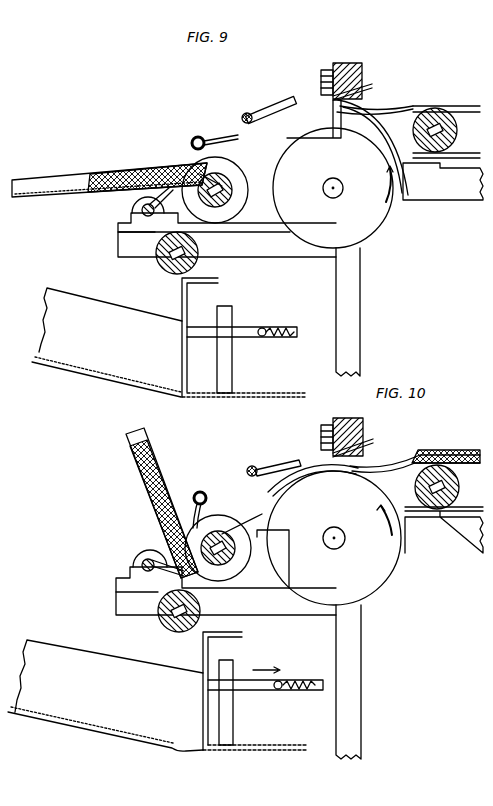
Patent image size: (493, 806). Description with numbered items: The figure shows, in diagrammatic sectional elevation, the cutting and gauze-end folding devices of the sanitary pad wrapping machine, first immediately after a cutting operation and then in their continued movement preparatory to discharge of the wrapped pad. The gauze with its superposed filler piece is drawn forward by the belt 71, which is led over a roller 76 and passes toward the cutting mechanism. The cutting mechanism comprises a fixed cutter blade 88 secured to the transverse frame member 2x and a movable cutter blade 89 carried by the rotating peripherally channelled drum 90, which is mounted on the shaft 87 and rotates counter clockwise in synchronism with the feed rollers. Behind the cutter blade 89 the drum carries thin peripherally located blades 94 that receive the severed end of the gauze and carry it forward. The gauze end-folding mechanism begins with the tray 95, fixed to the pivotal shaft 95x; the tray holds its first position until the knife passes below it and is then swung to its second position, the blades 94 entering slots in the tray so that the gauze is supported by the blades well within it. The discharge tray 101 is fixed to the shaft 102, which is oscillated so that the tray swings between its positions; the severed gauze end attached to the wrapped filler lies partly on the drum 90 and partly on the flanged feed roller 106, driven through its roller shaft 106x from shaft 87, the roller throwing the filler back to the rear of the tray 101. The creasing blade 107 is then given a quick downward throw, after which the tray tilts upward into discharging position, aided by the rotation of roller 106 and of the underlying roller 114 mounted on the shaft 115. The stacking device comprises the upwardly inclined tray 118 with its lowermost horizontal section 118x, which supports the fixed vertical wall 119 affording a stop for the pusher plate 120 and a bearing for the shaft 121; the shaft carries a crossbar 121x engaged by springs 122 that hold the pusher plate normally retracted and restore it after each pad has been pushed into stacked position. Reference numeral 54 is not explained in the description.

In FIG. 9, the transverse frame member 2x is at (358, 73).
In FIG. 10, the transverse frame member 2x is at (364, 422).
In FIG. 9, the web 54 is at (428, 110).
In FIG. 9, the belt 71 is at (470, 107).
In FIG. 10, the belt 71 is at (415, 461).
In FIG. 9, the roller 76 is at (446, 160).
In FIG. 10, the roller 76 is at (438, 508).
In FIG. 9, the shaft 87 is at (340, 181).
In FIG. 10, the shaft 87 is at (341, 532).
In FIG. 9, the fixed cutter blade 88 is at (331, 100).
In FIG. 10, the fixed cutter blade 88 is at (331, 456).
In FIG. 9, the movable cutter blade 89 is at (333, 122).
In FIG. 10, the movable cutter blade 89 is at (275, 536).
In FIG. 9, the drum 90 is at (333, 188).
In FIG. 10, the drum 90 is at (334, 538).
In FIG. 9, the blades 94 is at (381, 137).
In FIG. 10, the blades 94 is at (338, 466).
In FIG. 9, the tray 95 is at (272, 108).
In FIG. 10, the tray 95 is at (269, 467).
In FIG. 9, the pivotal shaft 95x is at (248, 113).
In FIG. 10, the pivotal shaft 95x is at (250, 467).
In FIG. 9, the discharge tray 101 is at (64, 177).
In FIG. 10, the discharge tray 101 is at (143, 438).
In FIG. 9, the shaft 102 is at (139, 210).
In FIG. 10, the shaft 102 is at (140, 566).
In FIG. 9, the flanged feed roller 106 is at (228, 204).
In FIG. 10, the flanged feed roller 106 is at (238, 567).
In FIG. 9, the roller shaft 106x is at (203, 176).
In FIG. 10, the roller shaft 106x is at (227, 528).
In FIG. 9, the creasing blade 107 is at (210, 131).
In FIG. 10, the creasing blade 107 is at (204, 493).
In FIG. 9, the roller 114 is at (200, 265).
In FIG. 10, the roller 114 is at (170, 630).
In FIG. 9, the shaft 115 is at (163, 266).
In FIG. 10, the shaft 115 is at (156, 622).
In FIG. 9, the tray 118 is at (88, 378).
In FIG. 10, the tray 118 is at (72, 728).
In FIG. 9, the horizontal section 118x is at (290, 393).
In FIG. 10, the horizontal section 118x is at (277, 750).
In FIG. 9, the fixed vertical wall 119 is at (217, 352).
In FIG. 10, the fixed vertical wall 119 is at (233, 697).
In FIG. 9, the pusher plate 120 is at (182, 338).
In FIG. 10, the pusher plate 120 is at (203, 687).
In FIG. 9, the shaft 121 is at (256, 318).
In FIG. 10, the shaft 121 is at (238, 682).
In FIG. 9, the crossbar 121x is at (264, 338).
In FIG. 10, the crossbar 121x is at (277, 693).
In FIG. 9, the springs 122 is at (283, 338).
In FIG. 10, the springs 122 is at (312, 691).